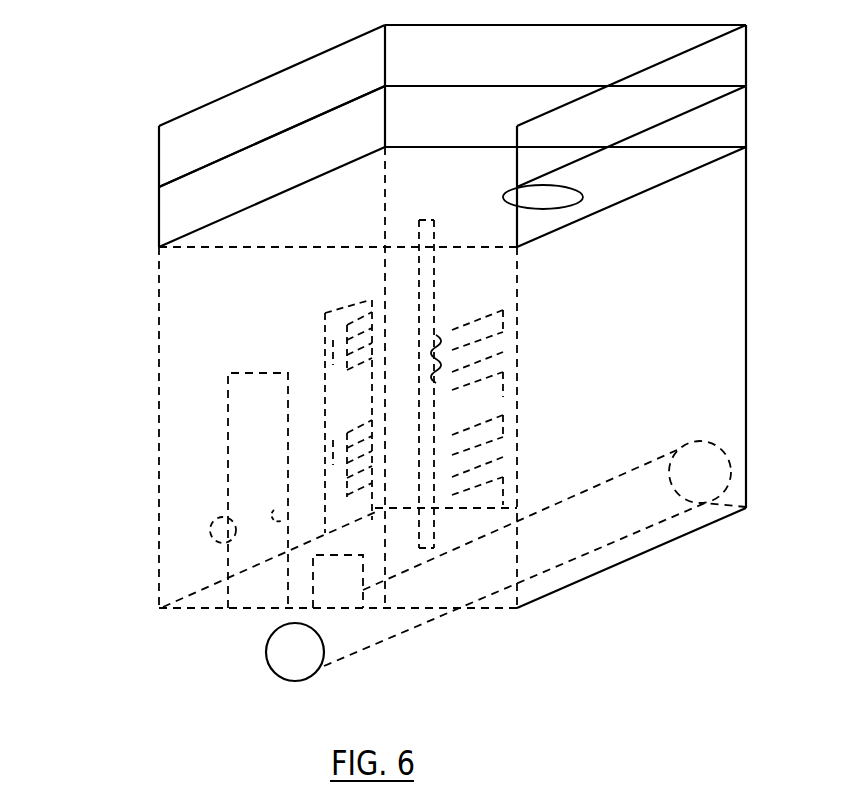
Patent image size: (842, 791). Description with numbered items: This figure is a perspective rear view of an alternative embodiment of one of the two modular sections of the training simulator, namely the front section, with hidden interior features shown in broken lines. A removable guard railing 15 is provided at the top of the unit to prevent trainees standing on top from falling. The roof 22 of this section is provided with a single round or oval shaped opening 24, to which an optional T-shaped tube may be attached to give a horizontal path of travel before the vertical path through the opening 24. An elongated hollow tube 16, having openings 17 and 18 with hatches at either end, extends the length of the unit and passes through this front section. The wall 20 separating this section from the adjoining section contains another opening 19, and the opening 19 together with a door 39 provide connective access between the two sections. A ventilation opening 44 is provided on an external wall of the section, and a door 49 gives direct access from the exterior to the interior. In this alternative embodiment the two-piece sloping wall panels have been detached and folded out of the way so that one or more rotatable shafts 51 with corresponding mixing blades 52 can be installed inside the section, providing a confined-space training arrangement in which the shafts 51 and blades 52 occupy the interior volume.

The removable guard railing 15 is at (746, 61).
The elongated hollow tube 16 is at (372, 628).
The opening 17 is at (285, 657).
The opening 18 is at (710, 470).
The opening 19 is at (335, 575).
The wall 20 is at (180, 567).
The roof 22 is at (278, 224).
The round or oval shaped opening 24 is at (565, 192).
The door 39 is at (247, 448).
The ventilation opening 44 is at (198, 530).
The door 49 is at (338, 353).
The rotatable shaft 51 is at (433, 283).
The mixing blades 52 is at (492, 377).